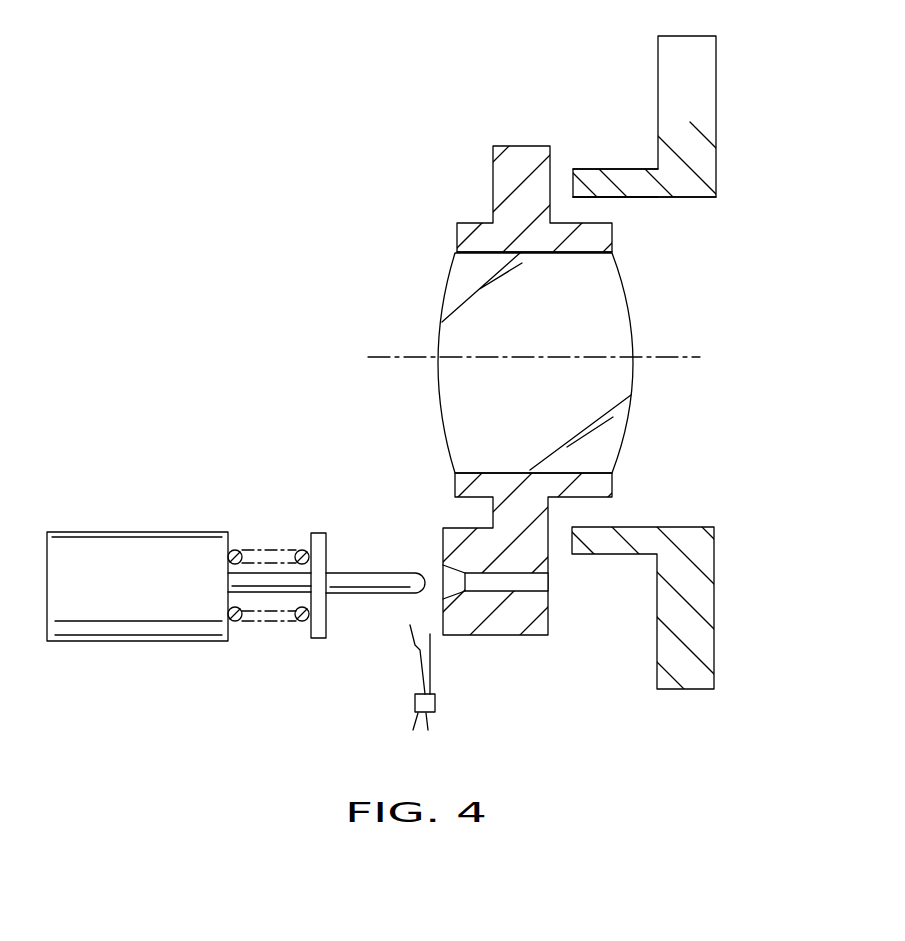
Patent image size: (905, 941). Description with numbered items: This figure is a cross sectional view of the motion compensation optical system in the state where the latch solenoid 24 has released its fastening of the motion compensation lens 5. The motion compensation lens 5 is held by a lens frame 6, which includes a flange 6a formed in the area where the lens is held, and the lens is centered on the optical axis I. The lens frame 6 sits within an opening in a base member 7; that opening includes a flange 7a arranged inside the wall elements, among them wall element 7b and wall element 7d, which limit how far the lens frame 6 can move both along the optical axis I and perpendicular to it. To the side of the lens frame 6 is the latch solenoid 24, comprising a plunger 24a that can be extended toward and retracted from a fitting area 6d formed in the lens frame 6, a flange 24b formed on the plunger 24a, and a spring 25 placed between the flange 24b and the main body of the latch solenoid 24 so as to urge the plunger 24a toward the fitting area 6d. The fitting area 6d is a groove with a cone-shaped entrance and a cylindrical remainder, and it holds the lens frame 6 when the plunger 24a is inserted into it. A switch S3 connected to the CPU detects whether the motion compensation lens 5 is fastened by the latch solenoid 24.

The optical axis I is at (397, 356).
The motion compensation lens 5 is at (452, 302).
The lens frame 6 is at (502, 187).
The flange 6a is at (587, 228).
The fitting area 6d is at (452, 597).
The base member 7 is at (705, 98).
The flange 7a is at (680, 198).
The wall element 7b is at (602, 177).
The wall element 7d is at (612, 547).
The latch solenoid 24 is at (150, 627).
The plunger 24a is at (355, 575).
The flange 24b is at (318, 537).
The spring 25 is at (263, 550).
The switch S3 is at (418, 700).